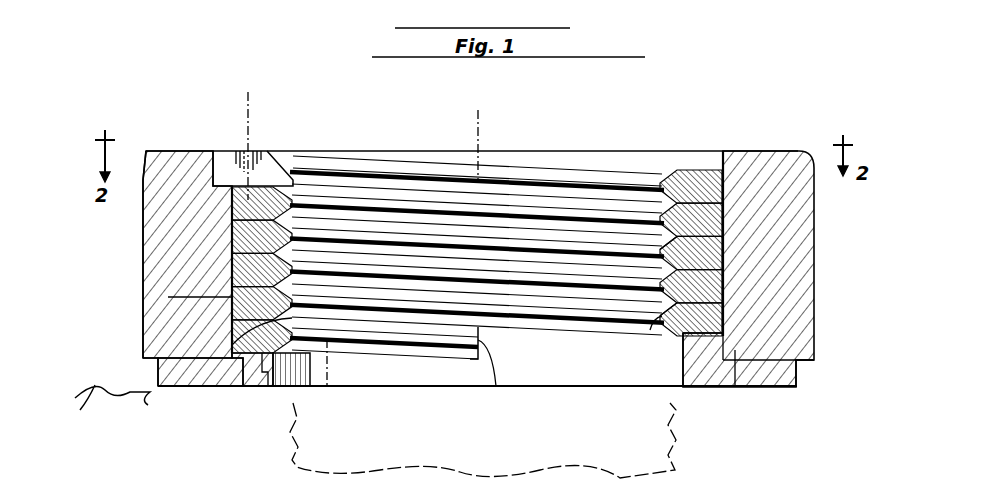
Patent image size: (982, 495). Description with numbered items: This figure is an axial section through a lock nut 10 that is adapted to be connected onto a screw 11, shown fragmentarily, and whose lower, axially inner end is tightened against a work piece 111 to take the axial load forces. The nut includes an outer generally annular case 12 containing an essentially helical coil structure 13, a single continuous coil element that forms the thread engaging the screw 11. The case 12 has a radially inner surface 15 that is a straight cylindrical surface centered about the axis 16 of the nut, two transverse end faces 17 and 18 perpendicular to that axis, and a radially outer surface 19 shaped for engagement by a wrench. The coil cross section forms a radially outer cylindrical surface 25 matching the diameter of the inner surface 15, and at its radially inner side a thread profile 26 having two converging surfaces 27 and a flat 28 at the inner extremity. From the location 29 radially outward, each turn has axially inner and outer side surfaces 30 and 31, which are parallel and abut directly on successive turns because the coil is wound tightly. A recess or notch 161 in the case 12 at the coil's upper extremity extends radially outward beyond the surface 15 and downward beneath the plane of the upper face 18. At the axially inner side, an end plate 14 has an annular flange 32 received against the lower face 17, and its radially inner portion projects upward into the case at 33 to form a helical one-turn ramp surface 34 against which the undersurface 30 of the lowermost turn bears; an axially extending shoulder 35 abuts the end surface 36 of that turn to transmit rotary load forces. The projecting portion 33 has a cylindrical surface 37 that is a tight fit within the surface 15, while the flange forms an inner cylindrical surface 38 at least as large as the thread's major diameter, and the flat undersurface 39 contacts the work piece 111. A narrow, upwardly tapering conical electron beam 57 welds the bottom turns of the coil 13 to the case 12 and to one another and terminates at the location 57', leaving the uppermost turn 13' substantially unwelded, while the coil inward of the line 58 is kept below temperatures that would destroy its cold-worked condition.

The lock nut 10 is at (707, 149).
The screw 11 is at (290, 459).
The outer case 12 is at (198, 150).
The coil structure 13 is at (477, 237).
The uppermost turn 13' is at (476, 153).
The end plate 14 is at (803, 378).
The radially inner surface 15 is at (760, 308).
The axis 16 is at (480, 142).
The transverse end face 17 is at (188, 387).
The transverse end face 18 is at (160, 151).
The radially outer surface 19 is at (143, 331).
The radially outer cylindrical surface 25 is at (760, 280).
The thread profile 26 is at (745, 252).
The converging surfaces 27 is at (663, 318).
The flat 28 is at (630, 322).
The location 29 is at (262, 387).
The axially inner side surface 30 is at (246, 387).
The axially outer side surface 31 is at (168, 297).
The flange 32 is at (783, 387).
The upwardly projecting portion 33 is at (690, 387).
The ramp surface 34 is at (722, 336).
The axially extending shoulder 35 is at (472, 354).
The end surface 36 is at (486, 335).
The cylindrical surface 37 is at (228, 344).
The cylindrical surface 38 is at (292, 368).
The undersurface 39 is at (738, 390).
The electron beam 57 is at (485, 261).
The beam termination location 57' is at (428, 231).
The line 58 is at (248, 125).
The work piece 111 is at (112, 413).
The notch 161 is at (265, 143).